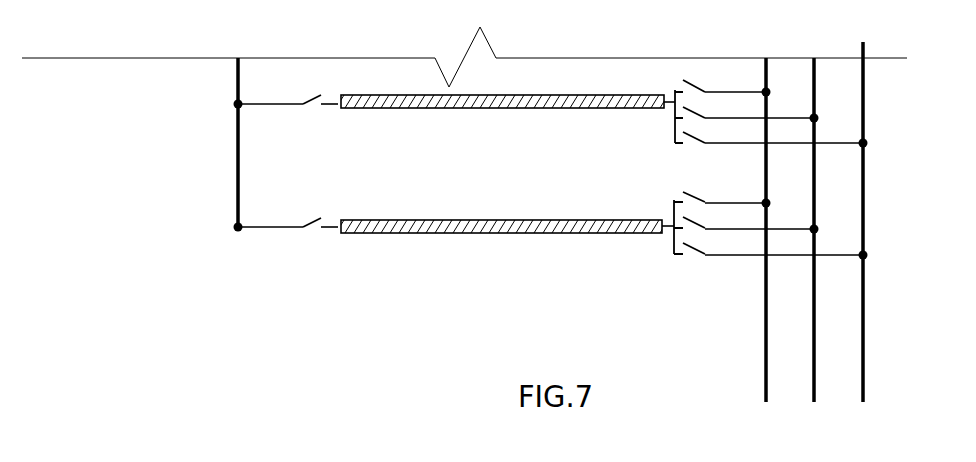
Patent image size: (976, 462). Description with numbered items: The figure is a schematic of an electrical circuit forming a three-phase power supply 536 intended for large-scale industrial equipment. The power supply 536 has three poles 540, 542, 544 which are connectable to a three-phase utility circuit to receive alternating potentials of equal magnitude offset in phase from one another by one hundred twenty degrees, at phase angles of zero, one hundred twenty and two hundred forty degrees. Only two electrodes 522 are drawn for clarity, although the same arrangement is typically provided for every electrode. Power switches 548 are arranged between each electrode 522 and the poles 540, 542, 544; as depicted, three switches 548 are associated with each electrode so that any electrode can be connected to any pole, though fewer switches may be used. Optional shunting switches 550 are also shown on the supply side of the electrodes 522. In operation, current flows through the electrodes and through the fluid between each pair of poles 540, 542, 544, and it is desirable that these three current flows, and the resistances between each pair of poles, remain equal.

The shunting switch 550 is at (280, 104).
The electrode 522 is at (548, 109).
The power supply 536 is at (507, 275).
The power switch 548 is at (690, 258).
The pole 540 is at (765, 270).
The pole 542 is at (814, 313).
The pole 544 is at (866, 312).